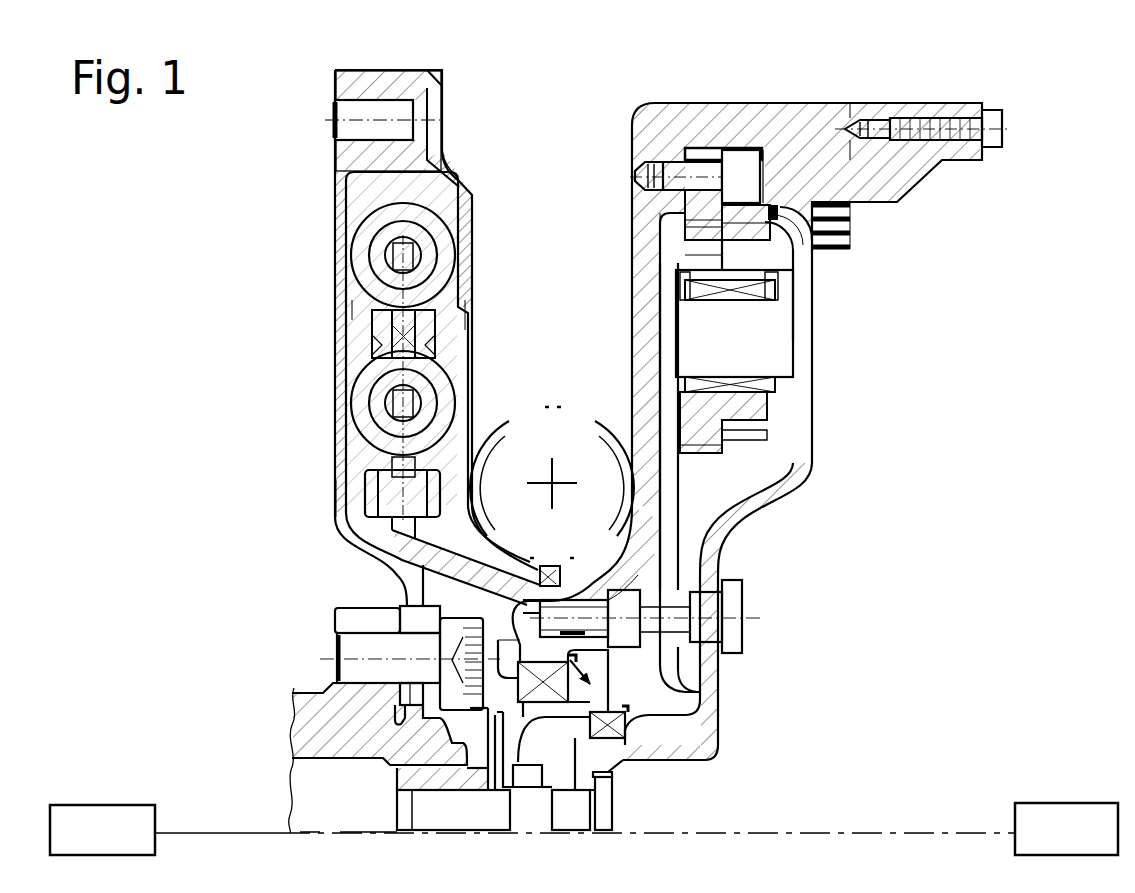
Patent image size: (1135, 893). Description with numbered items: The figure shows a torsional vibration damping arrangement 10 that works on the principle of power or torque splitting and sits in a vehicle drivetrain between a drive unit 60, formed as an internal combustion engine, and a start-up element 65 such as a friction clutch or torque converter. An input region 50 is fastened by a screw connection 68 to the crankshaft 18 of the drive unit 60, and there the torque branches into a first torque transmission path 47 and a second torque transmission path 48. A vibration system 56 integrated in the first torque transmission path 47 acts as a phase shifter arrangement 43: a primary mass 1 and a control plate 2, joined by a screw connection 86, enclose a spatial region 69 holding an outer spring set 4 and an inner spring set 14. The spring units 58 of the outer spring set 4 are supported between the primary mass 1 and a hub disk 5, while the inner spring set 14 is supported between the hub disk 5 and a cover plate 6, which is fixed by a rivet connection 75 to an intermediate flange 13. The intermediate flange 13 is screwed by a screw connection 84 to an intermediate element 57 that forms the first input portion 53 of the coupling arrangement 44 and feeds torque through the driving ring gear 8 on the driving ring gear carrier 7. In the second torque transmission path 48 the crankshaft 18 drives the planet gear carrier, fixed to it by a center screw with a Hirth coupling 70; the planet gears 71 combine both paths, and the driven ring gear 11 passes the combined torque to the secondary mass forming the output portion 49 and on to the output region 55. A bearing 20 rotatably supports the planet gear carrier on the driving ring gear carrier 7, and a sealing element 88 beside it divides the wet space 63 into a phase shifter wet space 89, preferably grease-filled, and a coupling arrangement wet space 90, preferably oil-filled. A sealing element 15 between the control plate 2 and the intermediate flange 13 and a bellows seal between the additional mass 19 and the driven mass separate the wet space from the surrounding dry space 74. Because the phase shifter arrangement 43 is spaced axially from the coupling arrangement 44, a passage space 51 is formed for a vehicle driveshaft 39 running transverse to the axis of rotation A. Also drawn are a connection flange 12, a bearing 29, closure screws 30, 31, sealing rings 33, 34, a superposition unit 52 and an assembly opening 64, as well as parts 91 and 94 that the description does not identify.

The primary mass 1 is at (342, 246).
The control plate 2 is at (446, 170).
The outer spring set 4 is at (447, 245).
The hub disk 5 is at (398, 258).
The cover plate 6 is at (387, 342).
The driving ring gear carrier 7 is at (652, 140).
The driving ring gear 8 is at (710, 208).
The torsional vibration damping arrangement 10 is at (557, 46).
The driven ring gear 11 is at (757, 214).
The connection flange 12 is at (410, 712).
The intermediate flange 13 is at (430, 576).
The inner spring set 14 is at (395, 410).
The sealing element 15 is at (395, 552).
The crankshaft 18 is at (312, 752).
The additional mass 19 is at (876, 176).
The bearing 20 is at (460, 680).
The bearing 29 is at (622, 723).
The closure screw 30 is at (737, 633).
The closure screw 31 is at (577, 810).
The sealing ring 33 is at (612, 785).
The sealing ring 34 is at (722, 670).
The driveshaft 39 is at (600, 487).
The phase shifter arrangement 43 is at (381, 64).
The coupling arrangement 44 is at (778, 245).
The first torque transmission path 47 is at (322, 542).
The second torque transmission path 48 is at (547, 726).
The output portion 49 is at (800, 328).
The input region 50 is at (250, 834).
The passage space 51 is at (556, 212).
The superposition unit 52 is at (784, 264).
The first input portion 53 is at (704, 141).
The output region 55 is at (706, 833).
The vibration system 56 is at (360, 299).
The intermediate element 57 is at (674, 128).
The spring unit 58 is at (378, 223).
The drive unit 60 is at (102, 830).
The wet space 63 is at (460, 443).
The assembly opening 64 is at (728, 610).
The start-up element 65 is at (1066, 829).
The screw connection 68 is at (370, 652).
The spatial region 69 is at (457, 328).
The Hirth coupling 70 is at (492, 748).
The planet gears 71 is at (745, 412).
The dry space 74 is at (936, 362).
The rivet connection 75 is at (395, 488).
The screw connection 84 is at (622, 626).
The screw connection 86 is at (378, 115).
The sealing element 88 is at (596, 668).
The phase shifter wet space 89 is at (455, 357).
The coupling arrangement wet space 90 is at (758, 473).
The support block 91 is at (577, 577).
The edge 94 is at (615, 766).
The axis of rotation A is at (845, 833).